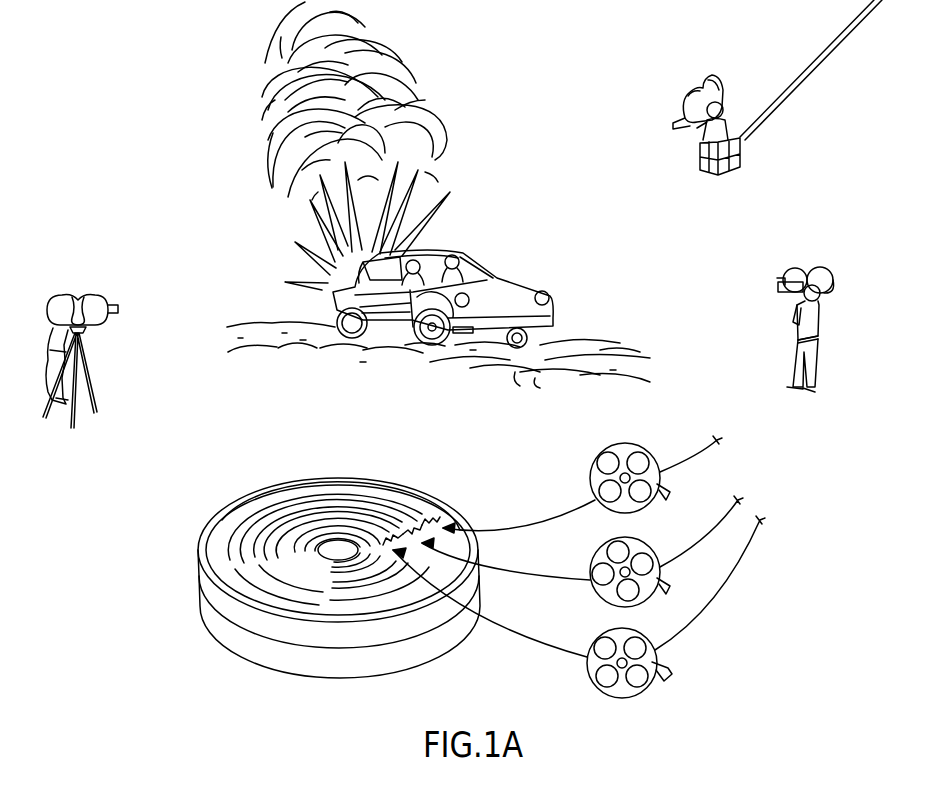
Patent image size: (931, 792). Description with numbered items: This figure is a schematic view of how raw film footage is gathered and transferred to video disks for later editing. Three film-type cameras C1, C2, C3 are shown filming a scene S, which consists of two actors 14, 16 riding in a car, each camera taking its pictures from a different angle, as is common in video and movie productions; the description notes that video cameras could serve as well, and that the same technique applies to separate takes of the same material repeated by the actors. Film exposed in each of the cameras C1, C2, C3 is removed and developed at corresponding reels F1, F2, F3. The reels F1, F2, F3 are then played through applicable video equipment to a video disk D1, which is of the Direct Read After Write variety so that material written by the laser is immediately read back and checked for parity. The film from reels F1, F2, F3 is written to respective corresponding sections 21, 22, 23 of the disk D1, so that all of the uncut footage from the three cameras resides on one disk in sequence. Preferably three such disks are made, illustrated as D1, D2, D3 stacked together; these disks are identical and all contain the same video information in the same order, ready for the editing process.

The camera C1 is at (71, 283).
The camera C2 is at (652, 113).
The camera C3 is at (793, 256).
The actor 14 is at (412, 280).
The actor 16 is at (466, 257).
The scene S is at (625, 364).
The video disk D1 is at (217, 517).
The video disk D2 is at (203, 587).
The video disk D3 is at (218, 632).
The section of disk 21 is at (428, 515).
The section of disk 22 is at (408, 523).
The section of disk 23 is at (387, 532).
The reel of film F1 is at (637, 446).
The reel of film F2 is at (639, 541).
The reel of film F3 is at (637, 631).